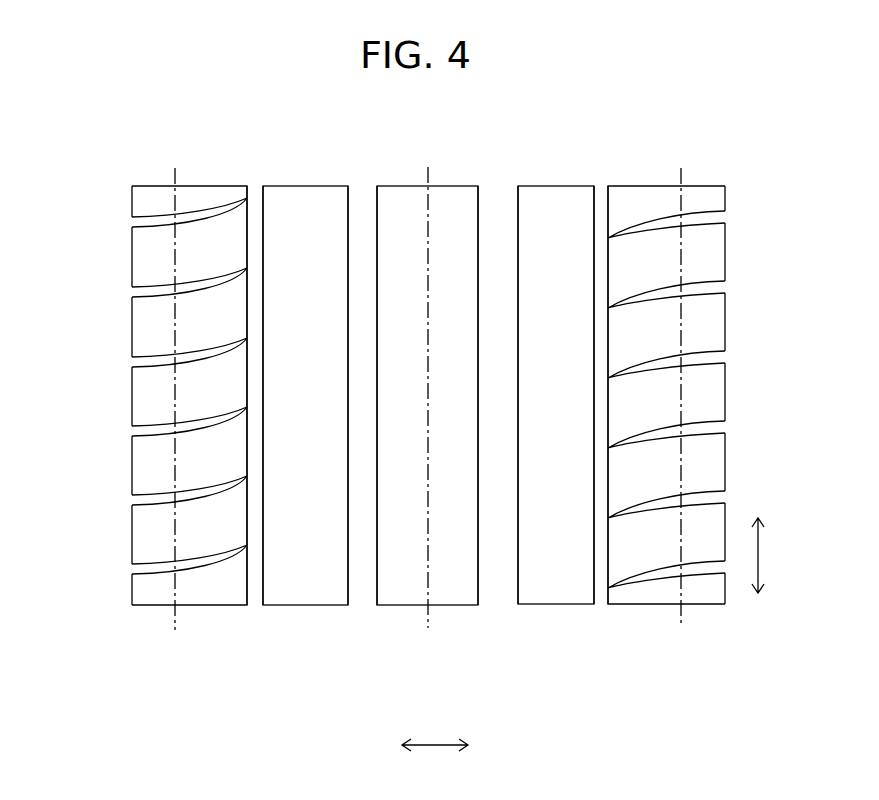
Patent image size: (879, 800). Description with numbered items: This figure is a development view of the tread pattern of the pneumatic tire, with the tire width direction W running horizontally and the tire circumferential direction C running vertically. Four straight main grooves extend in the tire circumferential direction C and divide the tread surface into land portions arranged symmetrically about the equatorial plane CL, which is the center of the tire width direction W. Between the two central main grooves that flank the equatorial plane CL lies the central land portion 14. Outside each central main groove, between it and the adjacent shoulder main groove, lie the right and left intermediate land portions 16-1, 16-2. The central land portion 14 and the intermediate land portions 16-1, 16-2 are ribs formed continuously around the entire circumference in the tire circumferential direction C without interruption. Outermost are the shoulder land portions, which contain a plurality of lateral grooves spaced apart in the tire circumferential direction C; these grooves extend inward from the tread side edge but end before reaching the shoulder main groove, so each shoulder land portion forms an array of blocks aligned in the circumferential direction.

The central land portion 14 is at (407, 202).
The intermediate land portion 16-1 is at (555, 197).
The intermediate land portion 16-2 is at (298, 198).
The equatorial plane CL is at (427, 612).
The tire circumferential direction C is at (767, 555).
The tire width direction W is at (435, 759).